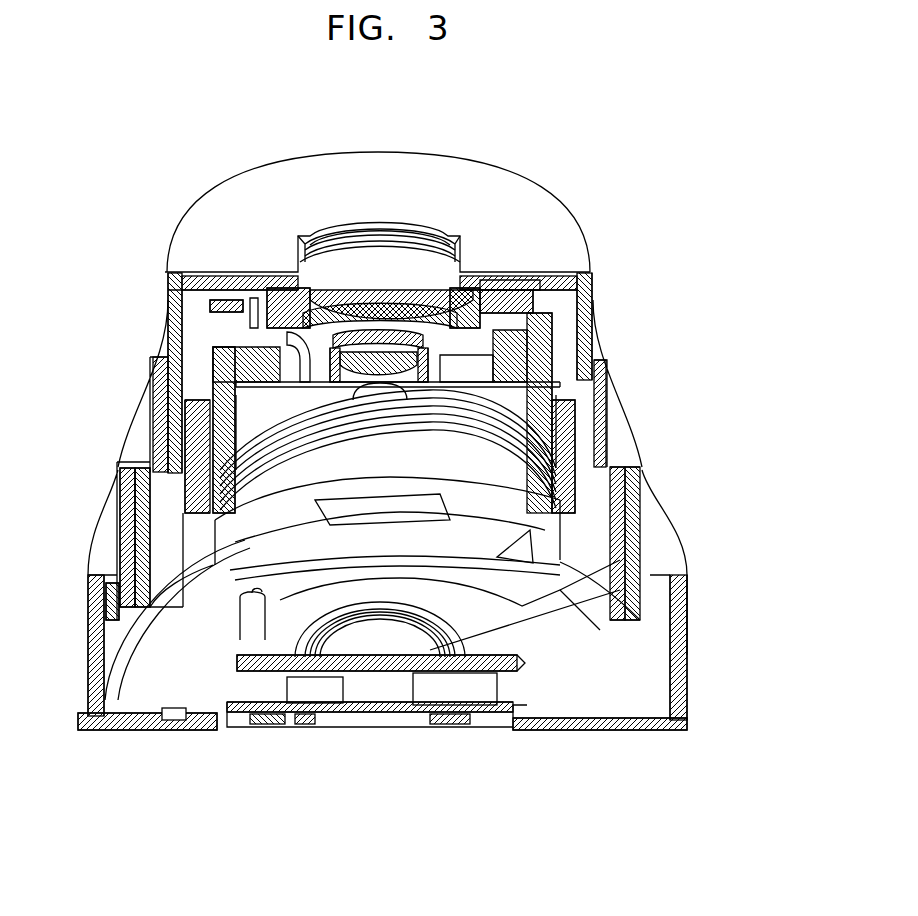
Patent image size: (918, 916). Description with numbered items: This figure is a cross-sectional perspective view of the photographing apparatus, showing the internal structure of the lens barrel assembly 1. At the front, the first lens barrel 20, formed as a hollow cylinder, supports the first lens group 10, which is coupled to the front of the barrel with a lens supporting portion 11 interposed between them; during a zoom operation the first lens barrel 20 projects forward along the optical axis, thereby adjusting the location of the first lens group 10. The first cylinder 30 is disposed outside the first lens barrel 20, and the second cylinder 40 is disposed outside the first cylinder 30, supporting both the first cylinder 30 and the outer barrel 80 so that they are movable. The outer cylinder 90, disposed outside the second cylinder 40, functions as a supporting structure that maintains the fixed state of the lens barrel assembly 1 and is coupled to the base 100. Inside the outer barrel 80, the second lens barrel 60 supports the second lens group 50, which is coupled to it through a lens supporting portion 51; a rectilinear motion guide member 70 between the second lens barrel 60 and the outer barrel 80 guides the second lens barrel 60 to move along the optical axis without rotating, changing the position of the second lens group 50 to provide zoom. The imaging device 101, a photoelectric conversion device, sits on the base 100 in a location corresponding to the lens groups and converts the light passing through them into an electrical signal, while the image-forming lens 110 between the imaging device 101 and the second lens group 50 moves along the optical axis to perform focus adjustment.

The lens barrel assembly 1 is at (682, 344).
The first lens group 10 is at (410, 300).
The lens supporting portion 11 is at (515, 292).
The first lens barrel 20 is at (599, 322).
The first cylinder 30 is at (611, 412).
The second cylinder 40 is at (646, 488).
The second lens group 50 is at (370, 338).
The lens supporting portion 51 is at (323, 292).
The second lens barrel 60 is at (210, 357).
The rectilinear motion guide member 70 is at (199, 467).
The outer barrel 80 is at (188, 406).
The outer cylinder 90 is at (689, 615).
The base 100 is at (569, 736).
The imaging device 101 is at (365, 695).
The image-forming lens 110 is at (395, 673).